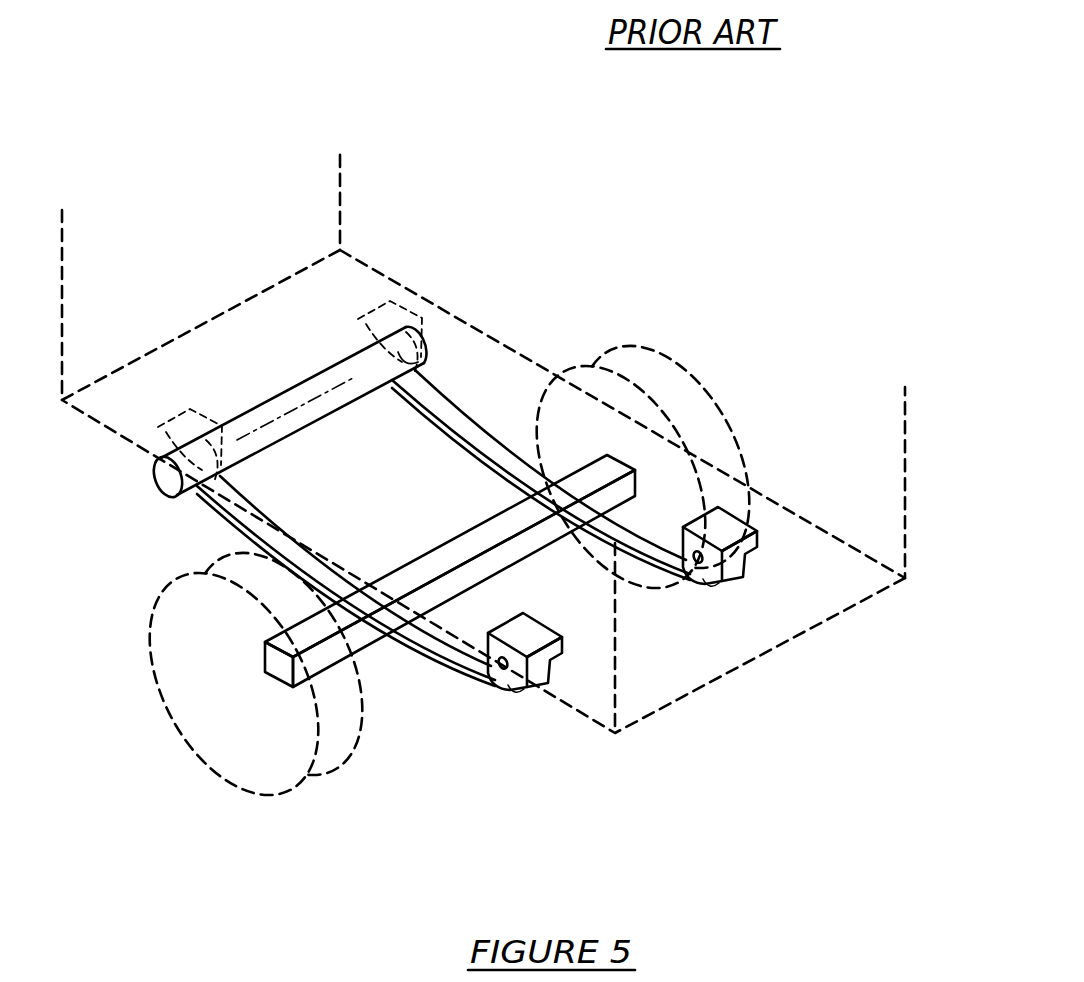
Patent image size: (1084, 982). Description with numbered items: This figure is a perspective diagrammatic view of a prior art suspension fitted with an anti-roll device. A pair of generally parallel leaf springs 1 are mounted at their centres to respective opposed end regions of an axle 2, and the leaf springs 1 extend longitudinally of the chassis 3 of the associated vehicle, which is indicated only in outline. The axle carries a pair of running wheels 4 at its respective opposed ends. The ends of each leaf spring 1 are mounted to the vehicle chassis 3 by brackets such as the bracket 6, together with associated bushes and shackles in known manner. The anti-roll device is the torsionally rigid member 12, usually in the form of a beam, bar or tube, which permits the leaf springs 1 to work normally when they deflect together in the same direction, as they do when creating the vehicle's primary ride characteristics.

The leaf springs 1 is at (460, 427).
The axle 2 is at (446, 557).
The chassis 3 is at (808, 620).
The running wheels 4 is at (250, 772).
The bracket 6 is at (518, 633).
The torsionally rigid member 12 is at (245, 443).